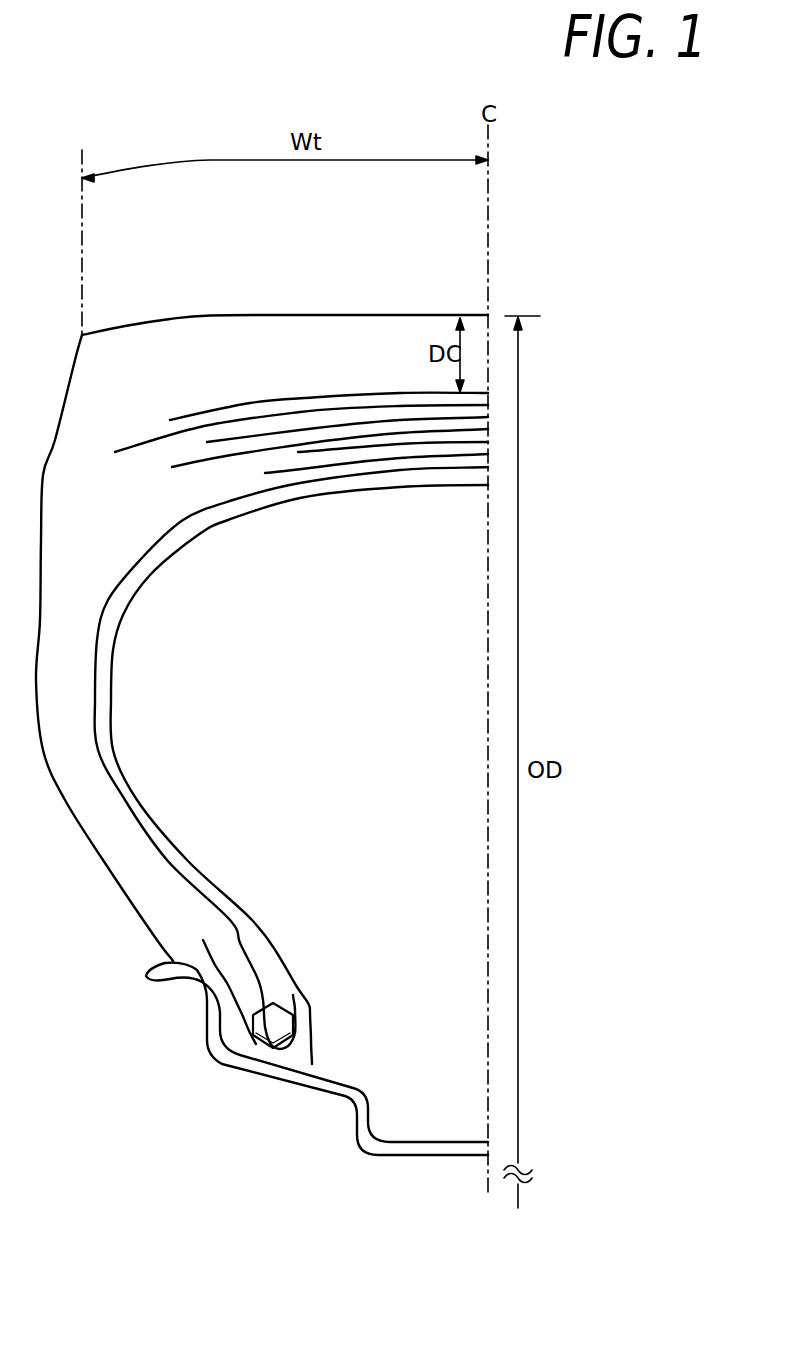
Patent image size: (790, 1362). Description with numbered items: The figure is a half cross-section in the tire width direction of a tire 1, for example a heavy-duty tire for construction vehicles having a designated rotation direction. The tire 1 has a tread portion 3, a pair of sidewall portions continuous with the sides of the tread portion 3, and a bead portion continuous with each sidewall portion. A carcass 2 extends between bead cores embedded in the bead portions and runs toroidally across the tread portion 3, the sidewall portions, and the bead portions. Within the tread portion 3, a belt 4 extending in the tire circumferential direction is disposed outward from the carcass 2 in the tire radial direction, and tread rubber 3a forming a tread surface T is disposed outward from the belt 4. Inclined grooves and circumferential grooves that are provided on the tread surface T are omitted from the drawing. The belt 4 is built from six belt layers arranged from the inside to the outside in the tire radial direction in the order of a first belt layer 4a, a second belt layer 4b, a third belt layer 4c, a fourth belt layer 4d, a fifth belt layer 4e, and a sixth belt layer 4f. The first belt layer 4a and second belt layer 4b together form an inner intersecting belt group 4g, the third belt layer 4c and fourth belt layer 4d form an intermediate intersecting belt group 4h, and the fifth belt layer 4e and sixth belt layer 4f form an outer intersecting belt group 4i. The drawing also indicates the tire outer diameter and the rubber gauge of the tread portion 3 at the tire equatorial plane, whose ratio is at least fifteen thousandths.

The tire 1 is at (563, 262).
The carcass 2 is at (168, 857).
The tread portion 3 is at (370, 305).
The tread rubber 3a is at (308, 337).
The tread surface T is at (240, 313).
The belt 4 is at (617, 355).
The first belt layer 4a is at (488, 454).
The second belt layer 4b is at (488, 442).
The third belt layer 4c is at (488, 429).
The fourth belt layer 4d is at (488, 417).
The fifth belt layer 4e is at (488, 405).
The sixth belt layer 4f is at (488, 393).
The inner intersecting belt group 4g is at (575, 460).
The intermediate intersecting belt group 4h is at (575, 403).
The outer intersecting belt group 4i is at (575, 345).